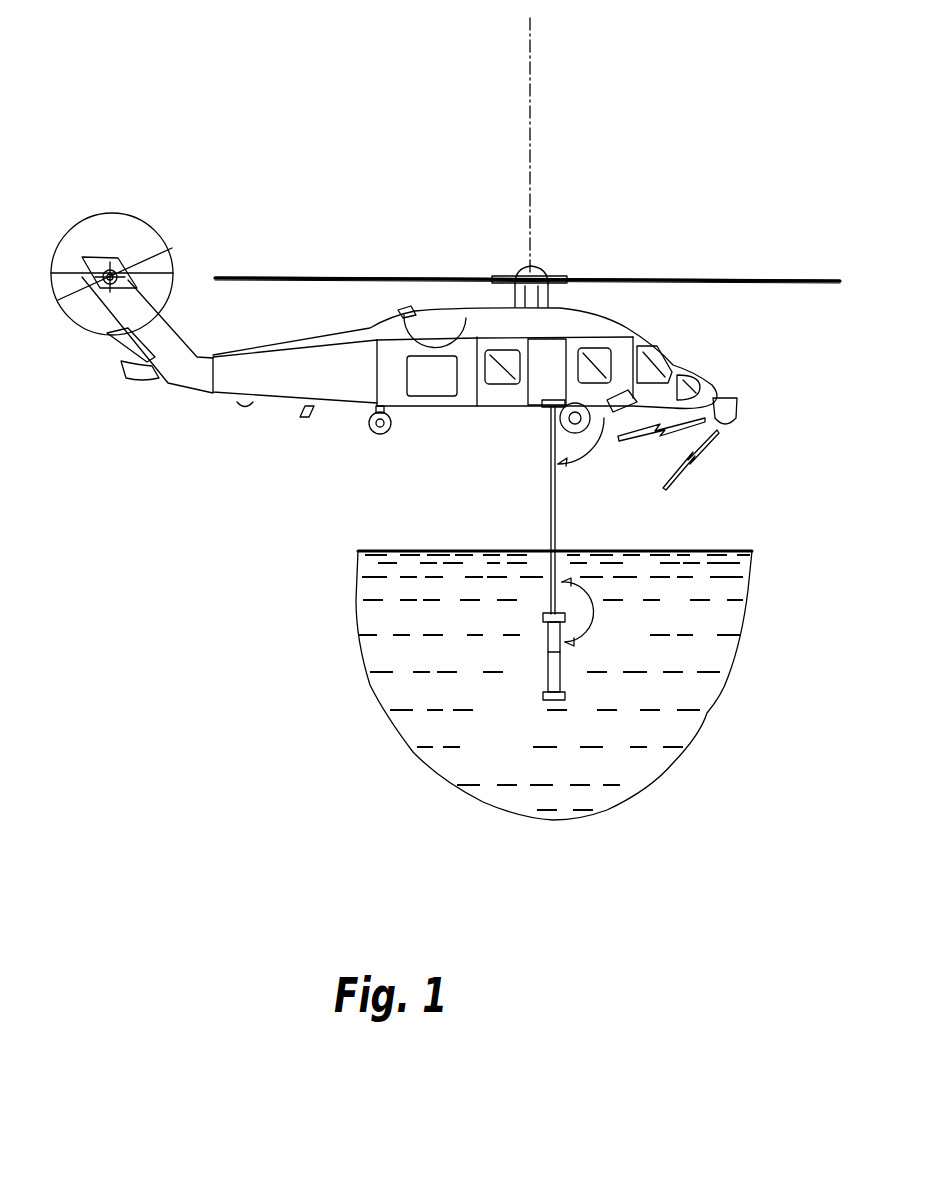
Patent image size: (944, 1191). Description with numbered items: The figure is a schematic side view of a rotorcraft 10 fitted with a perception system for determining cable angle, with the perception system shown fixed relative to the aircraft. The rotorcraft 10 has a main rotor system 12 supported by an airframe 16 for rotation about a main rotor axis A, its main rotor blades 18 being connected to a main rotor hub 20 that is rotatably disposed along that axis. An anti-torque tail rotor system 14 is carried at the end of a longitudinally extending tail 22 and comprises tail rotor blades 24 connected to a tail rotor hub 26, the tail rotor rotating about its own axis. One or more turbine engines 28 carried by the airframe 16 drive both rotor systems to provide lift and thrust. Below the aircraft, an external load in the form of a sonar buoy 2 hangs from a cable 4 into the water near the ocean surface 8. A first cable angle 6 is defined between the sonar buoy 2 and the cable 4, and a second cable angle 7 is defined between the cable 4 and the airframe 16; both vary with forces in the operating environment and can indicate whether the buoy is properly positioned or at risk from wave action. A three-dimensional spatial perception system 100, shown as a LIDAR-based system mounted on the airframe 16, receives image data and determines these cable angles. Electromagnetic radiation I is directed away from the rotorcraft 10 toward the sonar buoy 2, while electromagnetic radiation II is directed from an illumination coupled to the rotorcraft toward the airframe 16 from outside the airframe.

The rotorcraft 10 is at (669, 175).
The main rotor system 12 is at (353, 274).
The tail rotor system 14 is at (129, 283).
The airframe 16 is at (475, 340).
The main rotor blades 18 is at (542, 262).
The main rotor hub 20 is at (519, 262).
The longitudinally extending tail 22 is at (320, 409).
The tail rotor blades 24 is at (82, 315).
The tail rotor hub 26 is at (140, 262).
The turbine engines 28 is at (433, 320).
The 3D spatial perception system 100 is at (432, 386).
The sonar buoy 2 is at (533, 673).
The cable 4 is at (550, 473).
The first cable angle 6 is at (586, 622).
The second cable angle 7 is at (595, 447).
The ocean surface 8 is at (711, 551).
The main rotor axis A is at (531, 24).
The electromagnetic radiation I is at (710, 447).
The electromagnetic radiation II is at (647, 438).